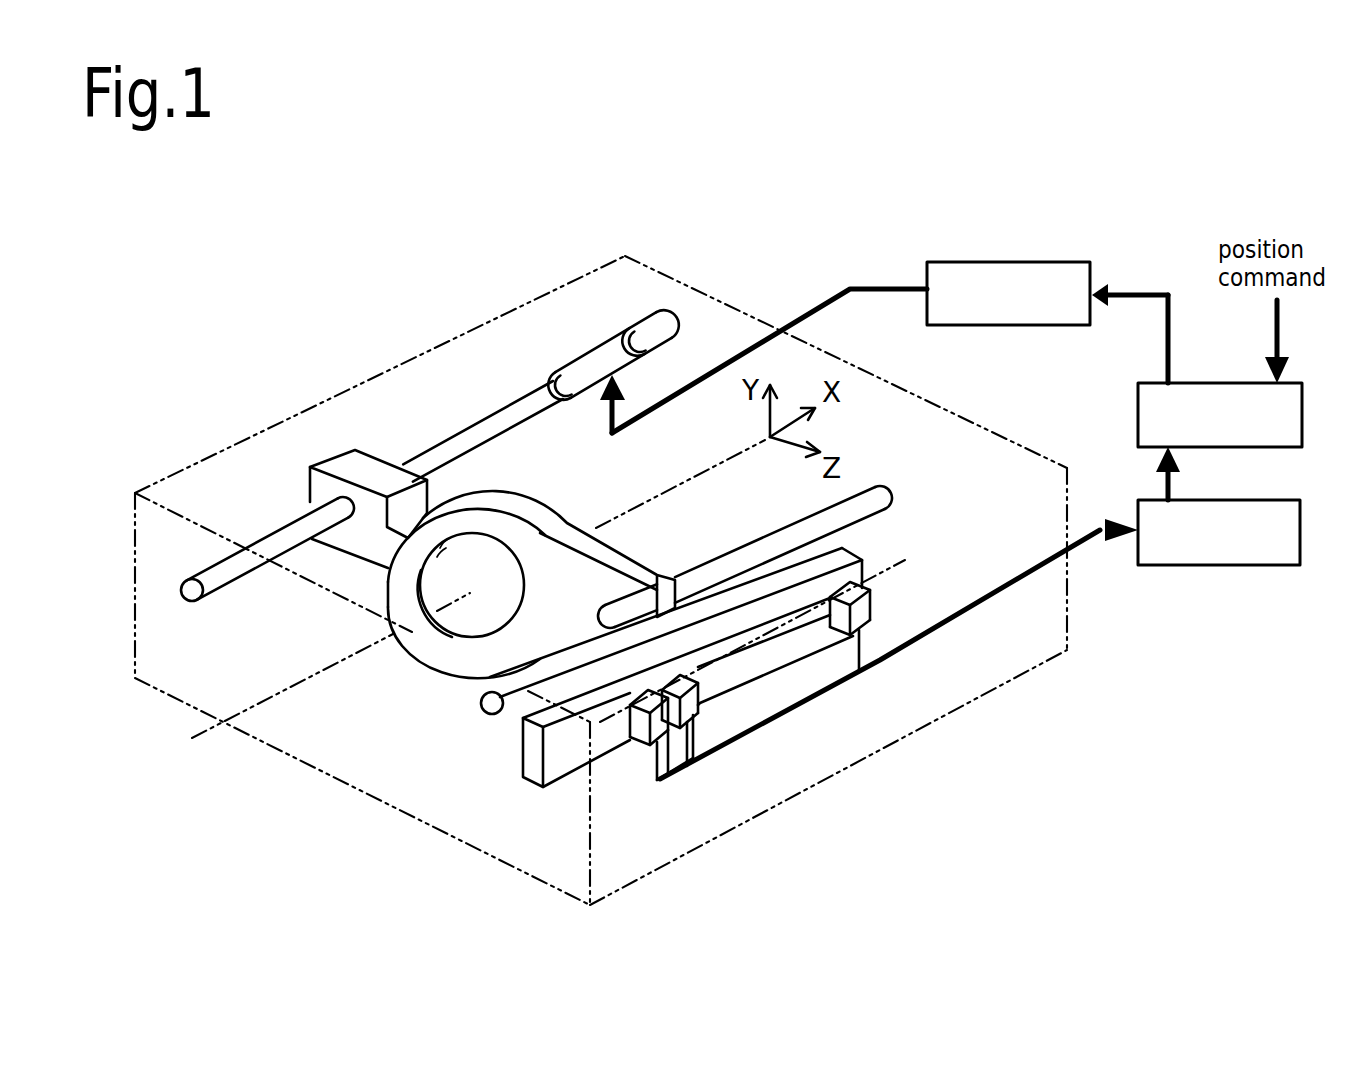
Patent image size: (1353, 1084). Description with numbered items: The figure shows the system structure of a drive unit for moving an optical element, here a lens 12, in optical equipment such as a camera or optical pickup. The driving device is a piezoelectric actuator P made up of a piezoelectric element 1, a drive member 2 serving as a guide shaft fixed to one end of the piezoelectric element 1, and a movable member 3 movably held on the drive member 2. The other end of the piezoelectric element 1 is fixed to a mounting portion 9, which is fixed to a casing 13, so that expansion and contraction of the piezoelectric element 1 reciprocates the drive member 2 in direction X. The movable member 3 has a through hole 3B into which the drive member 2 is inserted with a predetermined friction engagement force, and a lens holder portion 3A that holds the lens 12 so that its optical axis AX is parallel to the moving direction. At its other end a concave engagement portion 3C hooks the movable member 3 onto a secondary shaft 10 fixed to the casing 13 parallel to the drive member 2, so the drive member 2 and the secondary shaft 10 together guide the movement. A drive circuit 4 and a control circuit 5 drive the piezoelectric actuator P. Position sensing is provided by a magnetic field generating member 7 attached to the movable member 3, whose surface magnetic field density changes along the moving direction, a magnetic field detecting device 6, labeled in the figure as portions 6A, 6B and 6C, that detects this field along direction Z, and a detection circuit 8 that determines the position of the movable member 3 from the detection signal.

The piezoelectric element 1 is at (598, 358).
The drive member 2 is at (476, 432).
The movable member 3 is at (349, 463).
The lens holder portion 3A is at (486, 660).
The through hole 3B is at (325, 497).
The engagement portion 3C is at (623, 598).
The drive circuit 4 is at (972, 326).
The control circuit 5 is at (1138, 412).
The magnetic field detecting device 6 is at (893, 792).
The sensor element 6A is at (670, 726).
The sensor element 6B is at (692, 705).
The sensor element 6C is at (858, 620).
The magnetic field generating member 7 is at (533, 765).
The detection circuit 8 is at (1158, 566).
The mounting portion 9 is at (667, 320).
The secondary shaft 10 is at (486, 712).
The lens 12 is at (452, 613).
The casing 13 is at (178, 470).
The piezoelectric actuator P is at (613, 196).
The optical axis AX is at (198, 744).